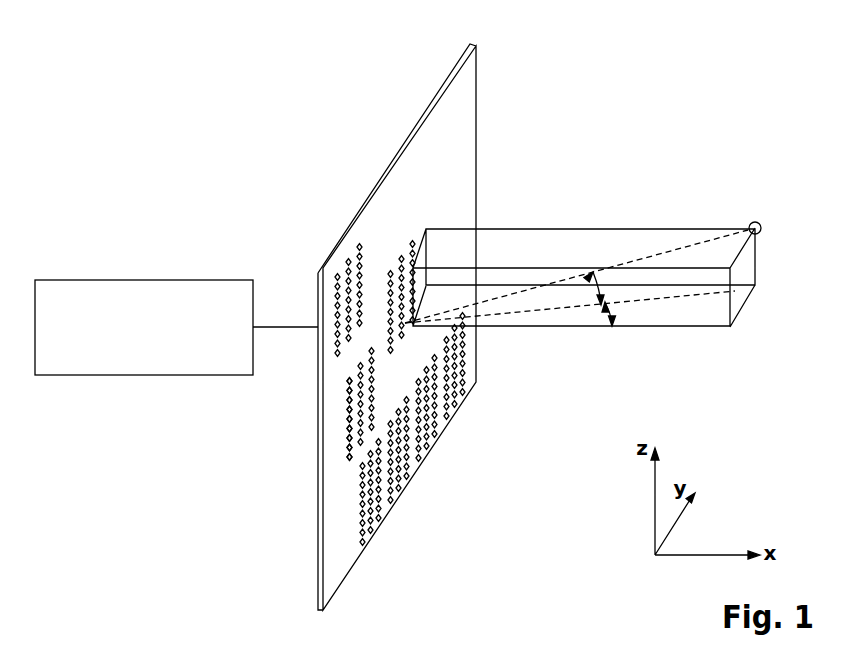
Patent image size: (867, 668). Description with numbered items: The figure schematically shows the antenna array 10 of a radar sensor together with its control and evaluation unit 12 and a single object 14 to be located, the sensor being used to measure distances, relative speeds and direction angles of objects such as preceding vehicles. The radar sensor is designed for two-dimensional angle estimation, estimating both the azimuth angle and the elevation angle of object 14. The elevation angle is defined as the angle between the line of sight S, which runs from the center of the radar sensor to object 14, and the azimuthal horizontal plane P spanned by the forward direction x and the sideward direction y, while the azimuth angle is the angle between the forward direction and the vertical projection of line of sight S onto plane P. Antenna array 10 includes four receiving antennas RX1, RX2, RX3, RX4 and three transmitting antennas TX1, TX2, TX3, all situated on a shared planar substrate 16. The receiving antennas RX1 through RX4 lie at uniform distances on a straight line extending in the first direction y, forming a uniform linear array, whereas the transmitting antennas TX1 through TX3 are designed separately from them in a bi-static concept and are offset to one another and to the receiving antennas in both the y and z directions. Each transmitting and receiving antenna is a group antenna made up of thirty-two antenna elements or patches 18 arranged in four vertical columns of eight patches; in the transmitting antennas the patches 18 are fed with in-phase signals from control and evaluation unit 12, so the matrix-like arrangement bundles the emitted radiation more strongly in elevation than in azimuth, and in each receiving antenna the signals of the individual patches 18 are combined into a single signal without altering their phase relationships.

The antenna array 10 is at (512, 132).
The control and evaluation unit 12 is at (88, 376).
The object 14 is at (758, 221).
The planar substrate 16 is at (320, 523).
The antenna elements or patches 18 is at (350, 380).
The transmitting antenna TX1 is at (348, 427).
The transmitting antenna TX2 is at (405, 255).
The transmitting antenna TX3 is at (343, 255).
The receiving antenna RX1 is at (382, 520).
The receiving antenna RX2 is at (413, 480).
The receiving antenna RX3 is at (440, 438).
The receiving antenna RX4 is at (463, 395).
The line of sight S is at (652, 257).
The azimuthal plane P is at (697, 312).